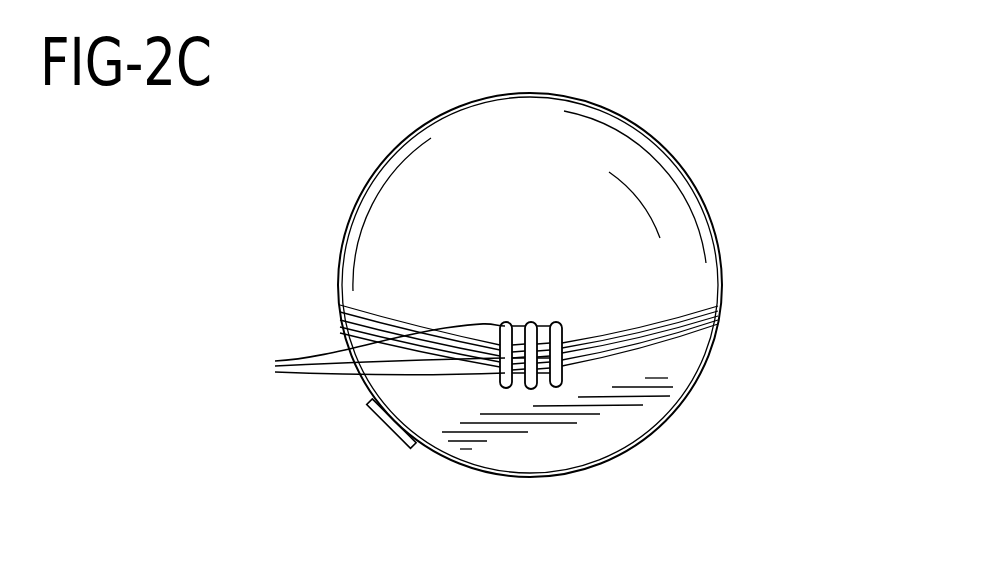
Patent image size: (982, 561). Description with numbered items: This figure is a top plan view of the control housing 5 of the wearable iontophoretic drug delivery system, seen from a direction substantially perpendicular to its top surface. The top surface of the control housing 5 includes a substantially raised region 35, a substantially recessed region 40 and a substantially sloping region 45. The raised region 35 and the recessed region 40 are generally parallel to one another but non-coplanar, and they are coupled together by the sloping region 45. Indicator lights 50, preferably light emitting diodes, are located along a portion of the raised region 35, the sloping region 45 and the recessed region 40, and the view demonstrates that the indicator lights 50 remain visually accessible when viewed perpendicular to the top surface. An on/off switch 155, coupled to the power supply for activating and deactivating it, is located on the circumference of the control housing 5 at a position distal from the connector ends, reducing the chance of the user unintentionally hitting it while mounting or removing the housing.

The control housing 5 is at (717, 233).
The raised region 35 is at (652, 185).
The recessed region 40 is at (655, 395).
The sloping region 45 is at (340, 311).
The indicator lights 50 is at (396, 353).
The on/off switch 155 is at (372, 417).